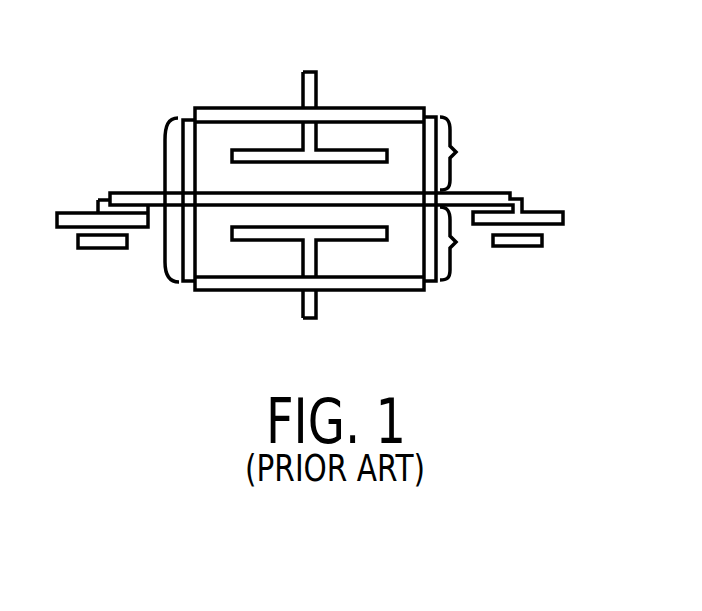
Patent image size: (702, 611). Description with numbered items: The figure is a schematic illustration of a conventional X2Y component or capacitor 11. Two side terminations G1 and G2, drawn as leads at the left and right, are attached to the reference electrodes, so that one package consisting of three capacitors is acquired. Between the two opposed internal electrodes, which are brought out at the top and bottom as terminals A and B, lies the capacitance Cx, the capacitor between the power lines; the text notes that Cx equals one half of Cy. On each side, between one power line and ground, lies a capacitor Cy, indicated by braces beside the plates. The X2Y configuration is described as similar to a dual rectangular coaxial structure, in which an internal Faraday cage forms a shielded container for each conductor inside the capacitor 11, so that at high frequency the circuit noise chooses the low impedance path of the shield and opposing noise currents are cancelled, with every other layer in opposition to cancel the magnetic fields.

The X2Y component or capacitor 11 is at (489, 85).
The first electrode terminal A is at (309, 109).
The second electrode terminal B is at (309, 284).
The capacitor between power lines Cx is at (113, 193).
The capacitor between one power line and ground Cy is at (462, 198).
The side termination G1 is at (170, 199).
The side termination G2 is at (436, 198).